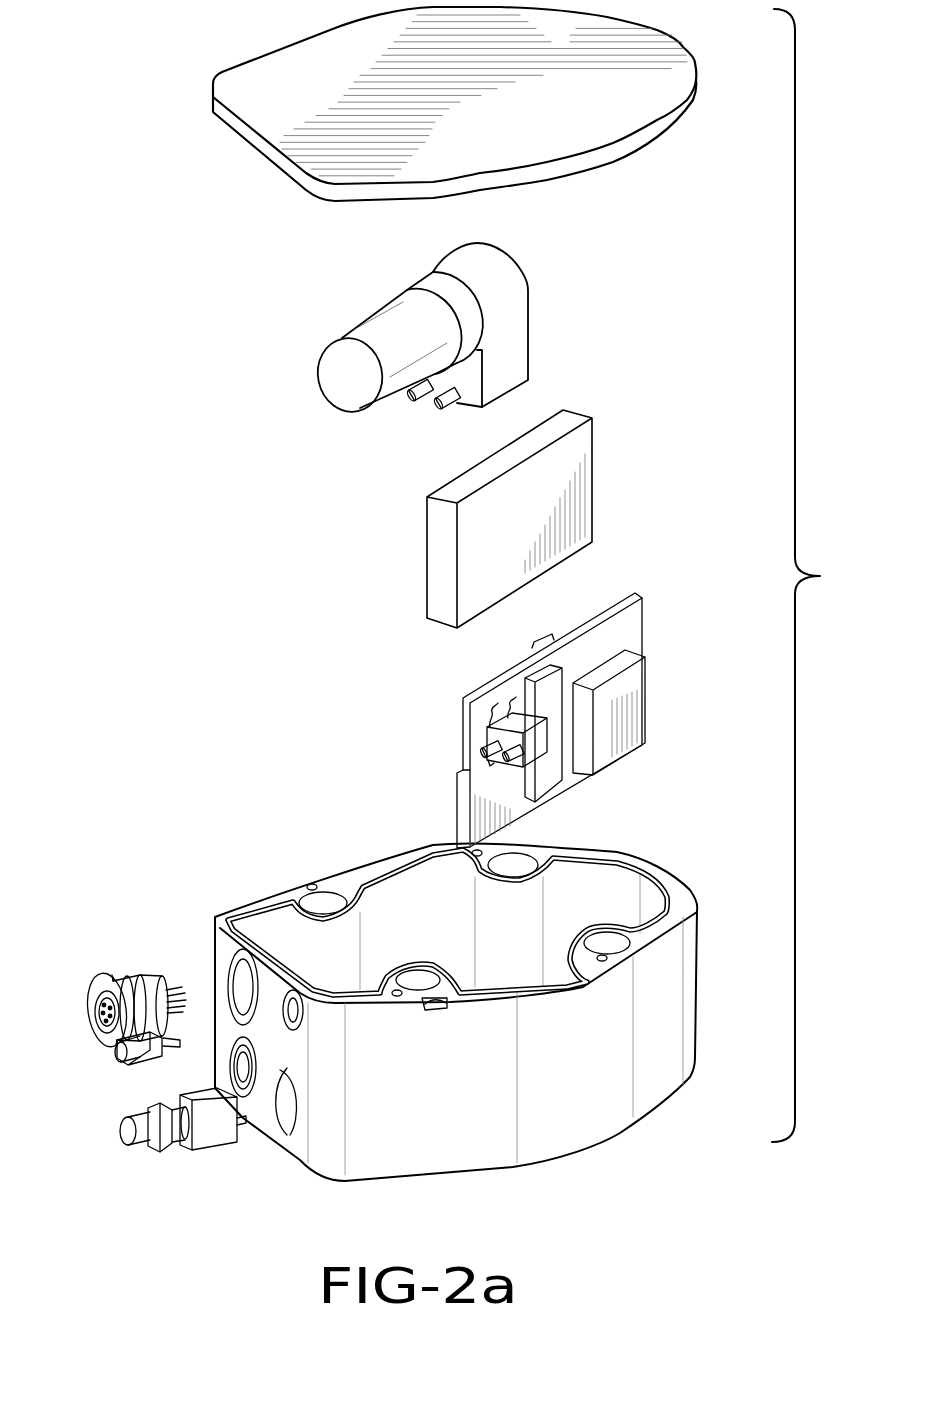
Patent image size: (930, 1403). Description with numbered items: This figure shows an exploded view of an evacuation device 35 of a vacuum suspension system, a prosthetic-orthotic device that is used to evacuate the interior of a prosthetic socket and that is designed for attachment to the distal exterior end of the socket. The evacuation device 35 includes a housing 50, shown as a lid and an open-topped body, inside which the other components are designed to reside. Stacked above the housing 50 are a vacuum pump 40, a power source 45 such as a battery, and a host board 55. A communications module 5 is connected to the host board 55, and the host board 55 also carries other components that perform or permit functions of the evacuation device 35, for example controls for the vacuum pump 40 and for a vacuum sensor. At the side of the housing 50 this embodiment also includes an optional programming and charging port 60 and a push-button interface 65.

The evacuation device 35 is at (91, 108).
The housing 50 is at (543, 130).
The vacuum pump 40 is at (502, 302).
The power source 45 is at (543, 500).
The host board 55 is at (485, 795).
The communications module 5 is at (661, 703).
The programming and charging port 60 is at (97, 988).
The push-button interface 65 is at (155, 1142).